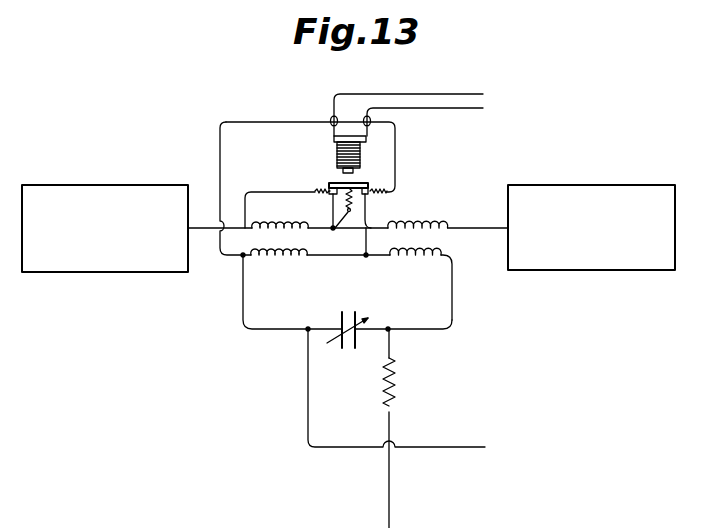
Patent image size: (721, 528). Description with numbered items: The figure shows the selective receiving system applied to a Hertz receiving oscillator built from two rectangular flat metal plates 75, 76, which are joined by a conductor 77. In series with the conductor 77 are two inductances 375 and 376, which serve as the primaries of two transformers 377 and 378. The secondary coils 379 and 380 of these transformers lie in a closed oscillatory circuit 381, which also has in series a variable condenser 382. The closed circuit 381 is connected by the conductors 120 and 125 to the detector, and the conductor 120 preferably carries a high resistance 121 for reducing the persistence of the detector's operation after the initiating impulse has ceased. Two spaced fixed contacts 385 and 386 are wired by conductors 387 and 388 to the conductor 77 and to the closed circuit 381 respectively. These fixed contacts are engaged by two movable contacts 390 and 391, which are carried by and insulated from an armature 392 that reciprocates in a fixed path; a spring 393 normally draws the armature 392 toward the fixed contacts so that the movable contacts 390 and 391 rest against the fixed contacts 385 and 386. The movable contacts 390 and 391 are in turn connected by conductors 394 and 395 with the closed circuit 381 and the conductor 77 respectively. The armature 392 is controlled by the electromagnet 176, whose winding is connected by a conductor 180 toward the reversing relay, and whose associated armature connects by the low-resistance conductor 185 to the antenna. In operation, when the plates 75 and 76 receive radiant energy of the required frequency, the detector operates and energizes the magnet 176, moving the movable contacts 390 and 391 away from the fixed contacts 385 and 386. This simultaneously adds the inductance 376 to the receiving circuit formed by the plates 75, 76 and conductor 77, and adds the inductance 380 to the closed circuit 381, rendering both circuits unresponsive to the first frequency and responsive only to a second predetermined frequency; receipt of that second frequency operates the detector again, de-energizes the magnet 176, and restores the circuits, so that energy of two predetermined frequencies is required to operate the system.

The rectangular flat metal plate 75 is at (105, 228).
The rectangular flat metal plate 76 is at (591, 227).
The conductor 77 is at (202, 228).
The conductor 120 is at (392, 345).
The high resistance 121 is at (394, 389).
The conductor 125 is at (308, 396).
The electromagnet 176 is at (338, 157).
The conductor 180 is at (473, 94).
The conductor 185 is at (475, 108).
The inductance 375 is at (420, 215).
The inductance 376 is at (279, 216).
The transformer 377 is at (440, 240).
The transformer 378 is at (233, 255).
The secondary coil 379 is at (417, 262).
The secondary coil 380 is at (290, 261).
The closed oscillatory circuit 381 is at (243, 315).
The variable condenser 382 is at (348, 312).
The fixed contact 385 is at (366, 196).
The fixed contact 386 is at (331, 197).
The conductor 387 is at (366, 216).
The conductor 388 is at (333, 214).
The movable contact 390 is at (392, 186).
The movable contact 391 is at (320, 190).
The armature 392 is at (357, 176).
The spring 393 is at (337, 221).
The conductor 394 is at (277, 122).
The conductor 395 is at (262, 192).